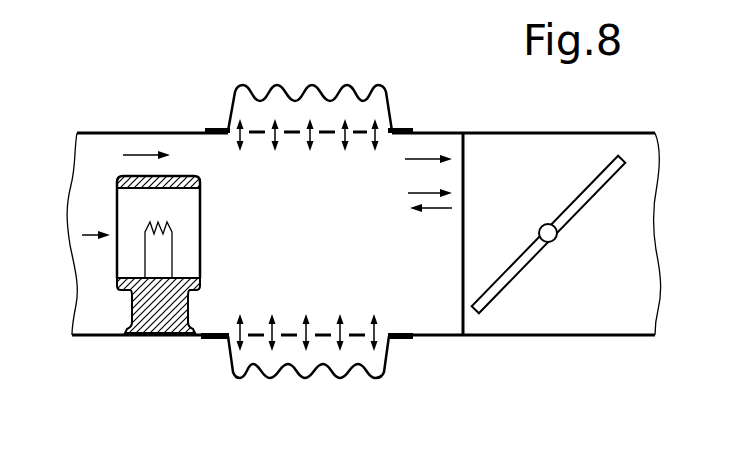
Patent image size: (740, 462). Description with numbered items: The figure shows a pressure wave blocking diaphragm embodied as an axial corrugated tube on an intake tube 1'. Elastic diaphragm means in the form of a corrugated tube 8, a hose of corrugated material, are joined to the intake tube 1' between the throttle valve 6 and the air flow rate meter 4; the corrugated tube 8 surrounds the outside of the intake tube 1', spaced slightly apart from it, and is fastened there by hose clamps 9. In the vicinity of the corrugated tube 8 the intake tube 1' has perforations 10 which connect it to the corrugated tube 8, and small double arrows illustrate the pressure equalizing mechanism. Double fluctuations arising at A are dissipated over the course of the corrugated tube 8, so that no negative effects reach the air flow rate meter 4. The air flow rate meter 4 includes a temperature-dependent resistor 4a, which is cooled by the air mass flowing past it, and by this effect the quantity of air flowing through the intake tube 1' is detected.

The intake tube 1' is at (526, 280).
The air flow rate meter 4 is at (122, 287).
The temperature-dependent resistor 4a is at (172, 235).
The throttle valve 6 is at (497, 290).
The corrugated tube 8 is at (298, 87).
The hose clamps 9 is at (217, 128).
The perforations 10 is at (280, 140).
The location of double fluctuations A is at (435, 206).